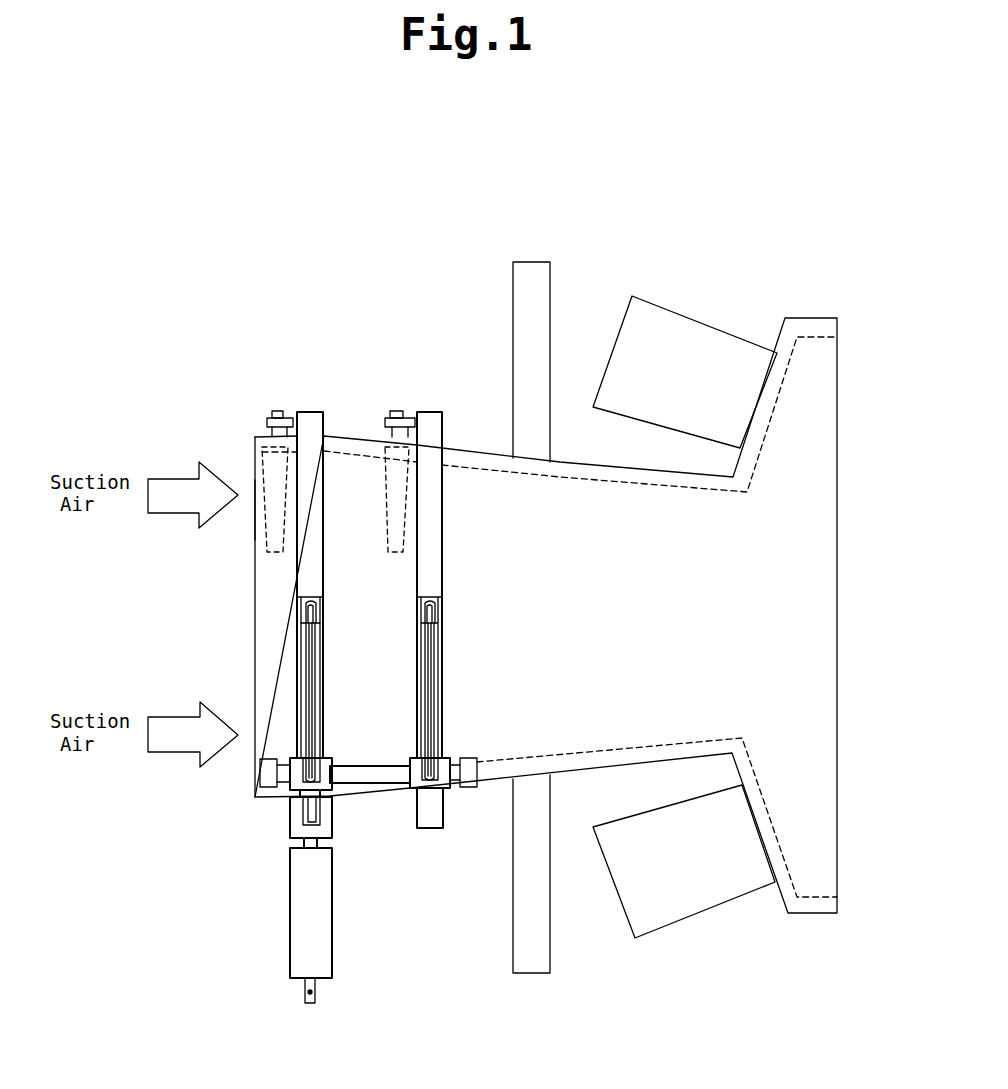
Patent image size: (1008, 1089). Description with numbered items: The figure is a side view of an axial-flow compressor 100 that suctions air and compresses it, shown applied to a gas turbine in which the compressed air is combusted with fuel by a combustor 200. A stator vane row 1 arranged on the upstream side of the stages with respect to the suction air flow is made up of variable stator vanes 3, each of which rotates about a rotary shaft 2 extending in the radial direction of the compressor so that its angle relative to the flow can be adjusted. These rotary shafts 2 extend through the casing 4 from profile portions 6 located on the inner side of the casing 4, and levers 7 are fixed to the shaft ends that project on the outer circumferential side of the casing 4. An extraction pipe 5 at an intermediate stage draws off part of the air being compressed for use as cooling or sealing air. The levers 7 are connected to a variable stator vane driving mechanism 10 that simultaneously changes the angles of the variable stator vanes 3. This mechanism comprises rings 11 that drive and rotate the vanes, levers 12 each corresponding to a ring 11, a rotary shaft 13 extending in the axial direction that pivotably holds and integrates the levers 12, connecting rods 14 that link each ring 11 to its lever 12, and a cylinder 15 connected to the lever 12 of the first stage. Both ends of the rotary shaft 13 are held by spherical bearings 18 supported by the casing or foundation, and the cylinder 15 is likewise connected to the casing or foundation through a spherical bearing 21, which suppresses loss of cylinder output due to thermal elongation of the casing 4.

The axial-flow compressor 100 is at (328, 334).
The stator vane row 1 is at (262, 432).
The rotary shaft 2 is at (275, 411).
The variable stator vane 3 is at (255, 462).
The casing 4 is at (837, 318).
The extraction pipe 5 is at (548, 262).
The profile portion 6 is at (255, 510).
The lever 7 is at (266, 418).
The variable stator vane driving mechanism 10 is at (452, 410).
The ring 11 is at (305, 412).
The lever 12 is at (292, 762).
The rotary shaft 13 is at (372, 790).
The connecting rod 14 is at (300, 655).
The cylinder 15 is at (290, 925).
The spherical bearing 18 is at (260, 778).
The spherical bearing 21 is at (305, 995).
The combustor 200 is at (700, 323).